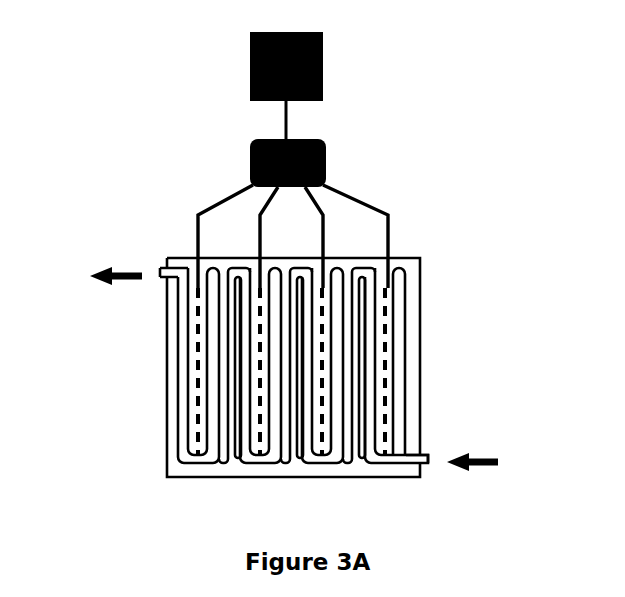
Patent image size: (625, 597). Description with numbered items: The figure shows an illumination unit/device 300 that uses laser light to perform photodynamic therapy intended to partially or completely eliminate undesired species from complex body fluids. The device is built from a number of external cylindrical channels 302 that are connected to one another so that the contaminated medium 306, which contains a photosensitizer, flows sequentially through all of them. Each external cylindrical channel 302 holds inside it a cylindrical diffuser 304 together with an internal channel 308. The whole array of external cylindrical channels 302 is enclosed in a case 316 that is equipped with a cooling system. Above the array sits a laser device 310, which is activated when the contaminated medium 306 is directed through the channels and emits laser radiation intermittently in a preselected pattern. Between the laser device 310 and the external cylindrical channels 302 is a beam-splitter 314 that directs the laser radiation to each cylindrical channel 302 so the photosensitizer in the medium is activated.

The illumination unit/device 300 is at (155, 52).
The external cylindrical channel 302 is at (411, 283).
The cylindrical diffuser 304 is at (396, 348).
The contaminated medium 306 is at (103, 302).
The internal channel 308 is at (405, 442).
The laser device 310 is at (343, 56).
The beam-splitter 314 is at (343, 154).
The case 316 is at (154, 447).